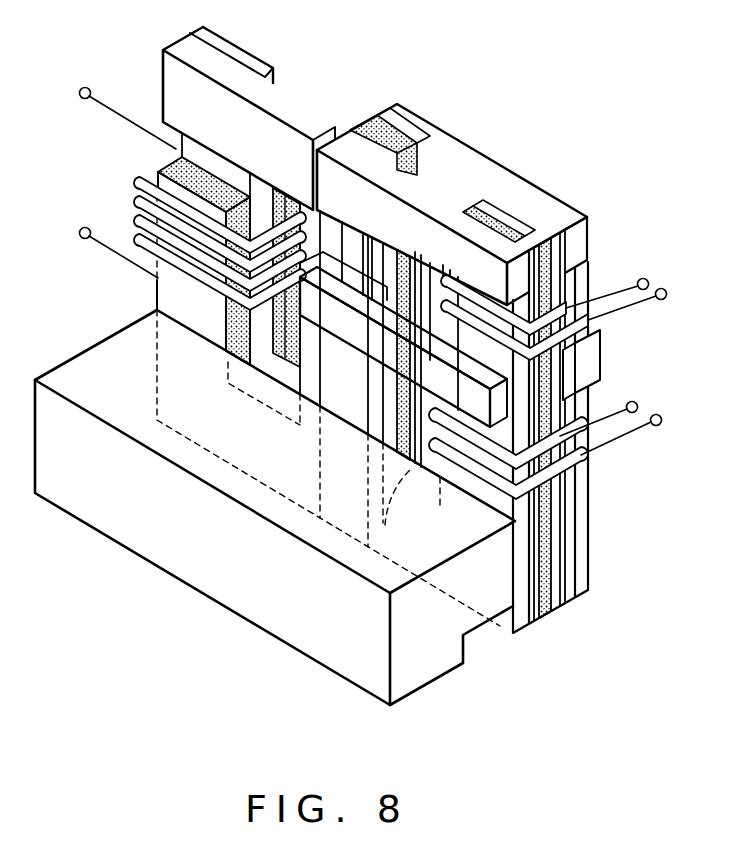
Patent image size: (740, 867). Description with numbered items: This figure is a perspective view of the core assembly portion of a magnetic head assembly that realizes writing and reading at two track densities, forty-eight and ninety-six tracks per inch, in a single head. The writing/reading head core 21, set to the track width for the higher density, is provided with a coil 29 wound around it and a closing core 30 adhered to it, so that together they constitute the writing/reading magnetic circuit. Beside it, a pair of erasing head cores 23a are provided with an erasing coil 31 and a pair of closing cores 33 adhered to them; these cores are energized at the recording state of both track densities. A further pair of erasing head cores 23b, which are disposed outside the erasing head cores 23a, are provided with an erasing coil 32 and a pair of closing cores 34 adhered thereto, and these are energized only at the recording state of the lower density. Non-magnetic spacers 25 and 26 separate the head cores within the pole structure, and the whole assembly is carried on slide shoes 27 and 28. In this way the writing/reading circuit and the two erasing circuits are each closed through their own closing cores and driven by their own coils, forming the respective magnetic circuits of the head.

The writing/reading head core 21 is at (262, 56).
The closing core 30 is at (300, 100).
The closing cores 33 is at (440, 210).
The non-magnetic spacer 25 is at (172, 166).
The coil 29 is at (110, 249).
The erasing coil 31 is at (616, 296).
The erasing coil 32 is at (627, 437).
The closing cores 34 is at (370, 347).
The slide shoe 27 is at (590, 505).
The erasing head cores 23a is at (530, 549).
The erasing head cores 23b is at (520, 595).
The non-magnetic spacer 26 is at (548, 610).
The slide shoe 28 is at (308, 660).